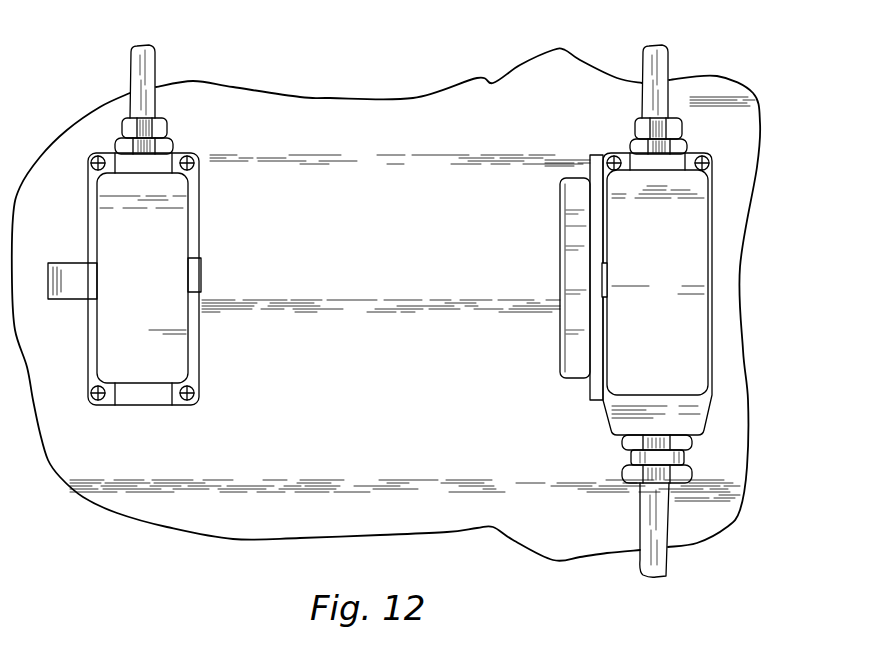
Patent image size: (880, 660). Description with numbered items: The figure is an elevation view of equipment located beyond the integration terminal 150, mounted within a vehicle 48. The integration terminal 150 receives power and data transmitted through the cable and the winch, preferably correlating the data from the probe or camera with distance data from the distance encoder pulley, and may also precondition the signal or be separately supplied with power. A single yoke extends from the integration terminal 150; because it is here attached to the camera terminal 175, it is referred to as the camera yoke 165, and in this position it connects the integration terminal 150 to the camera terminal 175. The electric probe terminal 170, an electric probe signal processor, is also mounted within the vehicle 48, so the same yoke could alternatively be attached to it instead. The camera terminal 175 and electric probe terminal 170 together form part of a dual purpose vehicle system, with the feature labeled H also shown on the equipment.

The vehicle 48 is at (363, 435).
The integration terminal 150 is at (685, 563).
The camera yoke 165 is at (680, 268).
The electric probe terminal 170 is at (112, 17).
The camera terminal 175 is at (684, 1).
The hinge component H is at (561, 262).